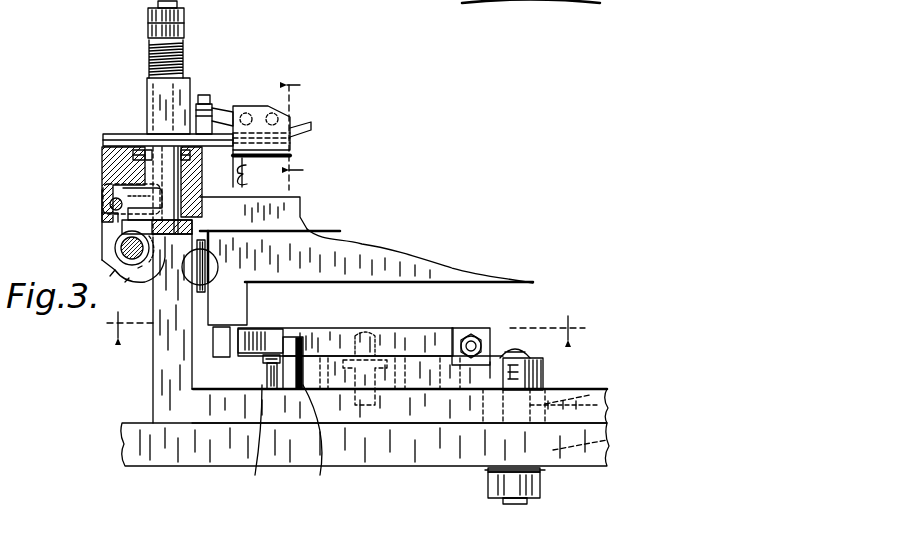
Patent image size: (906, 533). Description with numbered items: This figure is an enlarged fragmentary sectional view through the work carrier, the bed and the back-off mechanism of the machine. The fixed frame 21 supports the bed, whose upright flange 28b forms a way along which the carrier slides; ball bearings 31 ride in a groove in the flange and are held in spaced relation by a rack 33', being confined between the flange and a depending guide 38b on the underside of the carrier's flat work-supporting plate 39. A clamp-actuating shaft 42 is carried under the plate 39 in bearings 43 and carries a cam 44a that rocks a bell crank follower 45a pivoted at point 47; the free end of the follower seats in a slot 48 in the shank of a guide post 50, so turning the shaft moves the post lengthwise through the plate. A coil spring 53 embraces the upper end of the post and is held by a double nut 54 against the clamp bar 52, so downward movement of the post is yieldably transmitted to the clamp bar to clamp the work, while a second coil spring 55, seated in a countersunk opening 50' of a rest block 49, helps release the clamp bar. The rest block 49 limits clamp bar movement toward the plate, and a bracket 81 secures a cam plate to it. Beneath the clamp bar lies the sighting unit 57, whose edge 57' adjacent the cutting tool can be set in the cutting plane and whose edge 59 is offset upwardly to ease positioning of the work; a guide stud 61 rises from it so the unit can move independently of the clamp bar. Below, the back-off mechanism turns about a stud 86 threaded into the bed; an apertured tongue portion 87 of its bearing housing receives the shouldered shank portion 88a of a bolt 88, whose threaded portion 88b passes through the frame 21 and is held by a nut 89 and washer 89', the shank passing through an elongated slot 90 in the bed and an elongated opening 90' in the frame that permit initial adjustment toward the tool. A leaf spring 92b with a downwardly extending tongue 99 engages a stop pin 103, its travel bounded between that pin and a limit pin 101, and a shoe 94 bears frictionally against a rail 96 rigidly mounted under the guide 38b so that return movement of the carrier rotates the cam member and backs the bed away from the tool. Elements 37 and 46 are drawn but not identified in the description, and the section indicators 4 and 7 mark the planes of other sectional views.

The frame 21 is at (600, 460).
The upright flange 28b is at (155, 358).
The ball bearings 31 is at (207, 258).
The rack 33' is at (218, 269).
The body block 37 is at (413, 260).
The depending guide 38b is at (238, 302).
The work-supporting plate 39 is at (293, 212).
The clamp-actuating shaft 42 is at (116, 243).
The bearings 43 is at (128, 272).
The cam 44a is at (140, 268).
The bell crank follower 45a is at (110, 220).
The housing block 46 is at (113, 152).
The pivot point 47 is at (101, 188).
The slot 48 is at (176, 138).
The rest block 49 is at (247, 178).
The guide post 50 is at (148, 159).
The countersunk opening 50' is at (138, 121).
The clamp bar 52 is at (150, 143).
The coil spring 53 is at (185, 55).
The double nut 54 is at (185, 26).
The second coil spring 55 is at (197, 150).
The sighting unit 57 is at (279, 121).
The edge of sighting unit 57' is at (138, 118).
The offset edge of sighting unit 59 is at (312, 127).
The guide stud 61 is at (219, 529).
The bracket 81 is at (292, 156).
The stud 86 is at (404, 336).
The tongue portion 87 is at (545, 382).
The bolt 88 is at (514, 506).
The shouldered shank portion 88a is at (609, 409).
The threaded portion 88b is at (503, 499).
The nut 89 is at (526, 495).
The washer 89' is at (549, 489).
The elongated slot 90 is at (586, 388).
The elongated opening 90' is at (602, 440).
The leaf spring 92b is at (424, 340).
The shoe 94 is at (268, 380).
The rail 96 is at (216, 346).
The tongue 99 is at (264, 360).
The limit pin 101 is at (305, 249).
The stop pin 103 is at (266, 441).
The section line 4- 4 is at (309, 132).
The section line 7- 7 is at (346, 338).